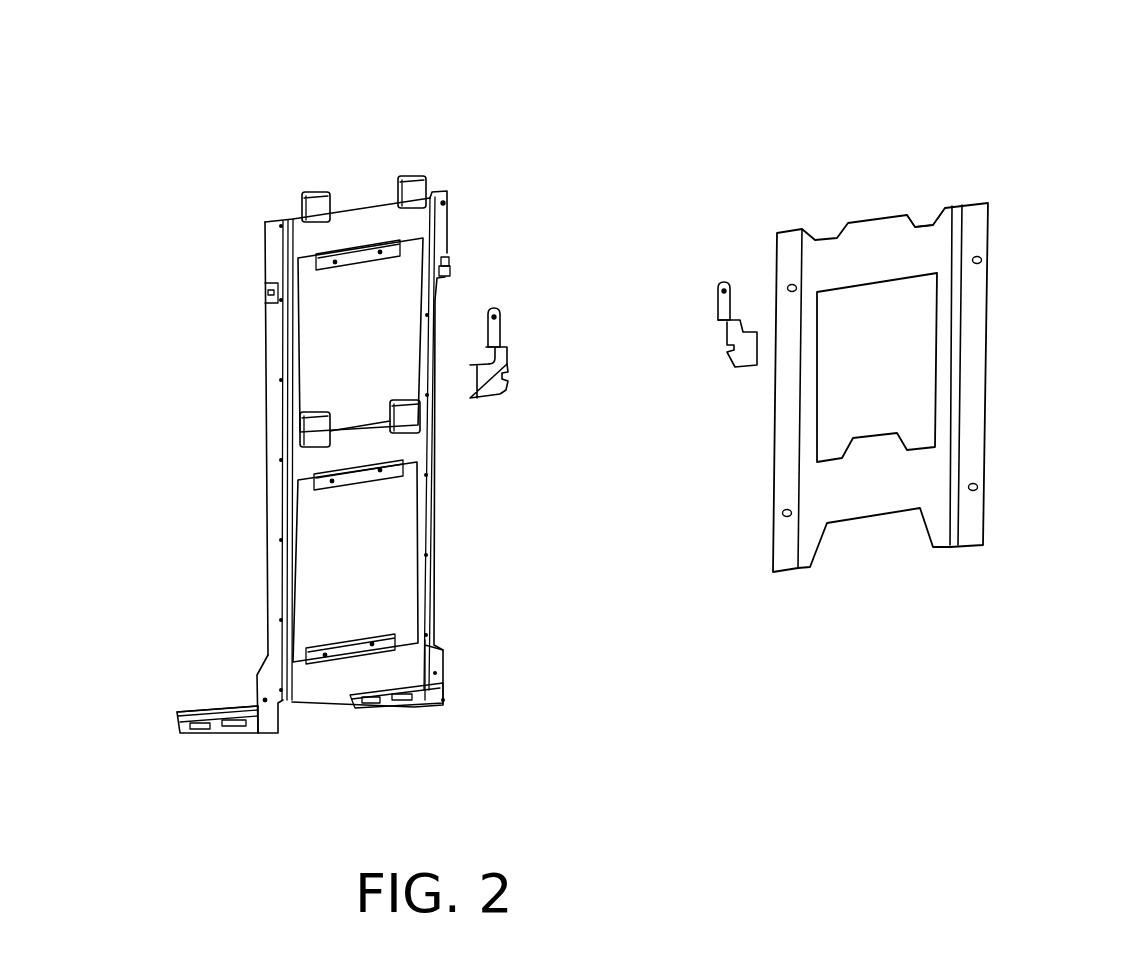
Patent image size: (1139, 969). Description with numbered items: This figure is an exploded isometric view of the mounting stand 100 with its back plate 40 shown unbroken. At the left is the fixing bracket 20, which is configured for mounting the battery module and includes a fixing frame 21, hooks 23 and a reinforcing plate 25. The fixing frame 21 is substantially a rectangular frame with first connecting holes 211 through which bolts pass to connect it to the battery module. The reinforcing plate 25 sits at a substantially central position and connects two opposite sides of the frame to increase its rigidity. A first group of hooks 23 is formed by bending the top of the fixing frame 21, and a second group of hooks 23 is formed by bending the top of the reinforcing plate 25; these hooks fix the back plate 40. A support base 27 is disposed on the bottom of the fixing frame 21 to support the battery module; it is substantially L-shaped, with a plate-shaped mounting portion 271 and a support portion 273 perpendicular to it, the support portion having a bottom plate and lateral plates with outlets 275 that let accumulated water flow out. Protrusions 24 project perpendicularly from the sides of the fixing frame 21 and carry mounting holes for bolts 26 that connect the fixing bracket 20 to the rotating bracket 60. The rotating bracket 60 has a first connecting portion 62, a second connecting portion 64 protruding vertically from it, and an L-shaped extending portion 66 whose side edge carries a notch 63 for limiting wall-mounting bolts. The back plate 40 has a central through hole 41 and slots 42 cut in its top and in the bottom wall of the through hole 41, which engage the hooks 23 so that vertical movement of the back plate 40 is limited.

The mounting stand 100 is at (450, 78).
The fixing bracket 20 is at (315, 677).
The fixing frame 21 is at (427, 552).
The first connecting hole 211 is at (447, 203).
The hook 23 is at (316, 205).
The protrusion 24 is at (446, 256).
The reinforcing plate 25 is at (380, 446).
The bolt 26 is at (451, 268).
The support base 27 is at (308, 803).
The mounting portion 271 is at (267, 712).
The support portion 273 is at (210, 727).
The outlet 275 is at (188, 712).
The back plate 40 is at (973, 407).
The through hole 41 is at (893, 339).
The slot 42 is at (927, 222).
The rotating bracket 60 is at (720, 300).
The first connecting portion 62 is at (497, 330).
The notch 63 is at (728, 347).
The second connecting portion 64 is at (505, 347).
The extending portion 66 is at (487, 383).